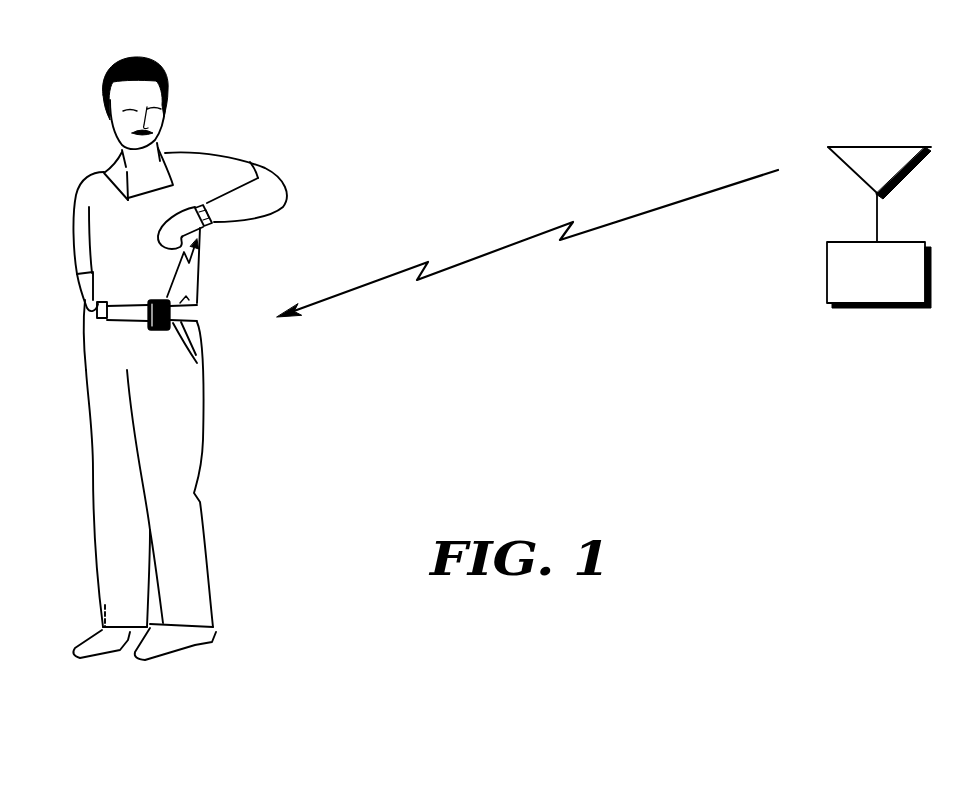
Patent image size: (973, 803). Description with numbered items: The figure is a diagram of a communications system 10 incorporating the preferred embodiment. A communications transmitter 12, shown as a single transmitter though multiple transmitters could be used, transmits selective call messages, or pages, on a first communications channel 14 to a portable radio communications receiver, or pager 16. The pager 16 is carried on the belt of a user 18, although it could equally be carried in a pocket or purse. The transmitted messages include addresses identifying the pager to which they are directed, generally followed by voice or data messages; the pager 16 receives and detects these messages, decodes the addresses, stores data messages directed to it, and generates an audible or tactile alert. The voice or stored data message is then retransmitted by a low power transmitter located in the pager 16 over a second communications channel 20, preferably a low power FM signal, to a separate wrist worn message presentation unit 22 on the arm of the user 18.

The communications system 10 is at (728, 575).
The communications transmitter 12 is at (920, 240).
The first communications channel 14 is at (525, 239).
The pager 16 is at (163, 333).
The user 18 is at (98, 165).
The second communications channel 20 is at (197, 258).
The wrist worn message presentation unit 22 is at (202, 203).